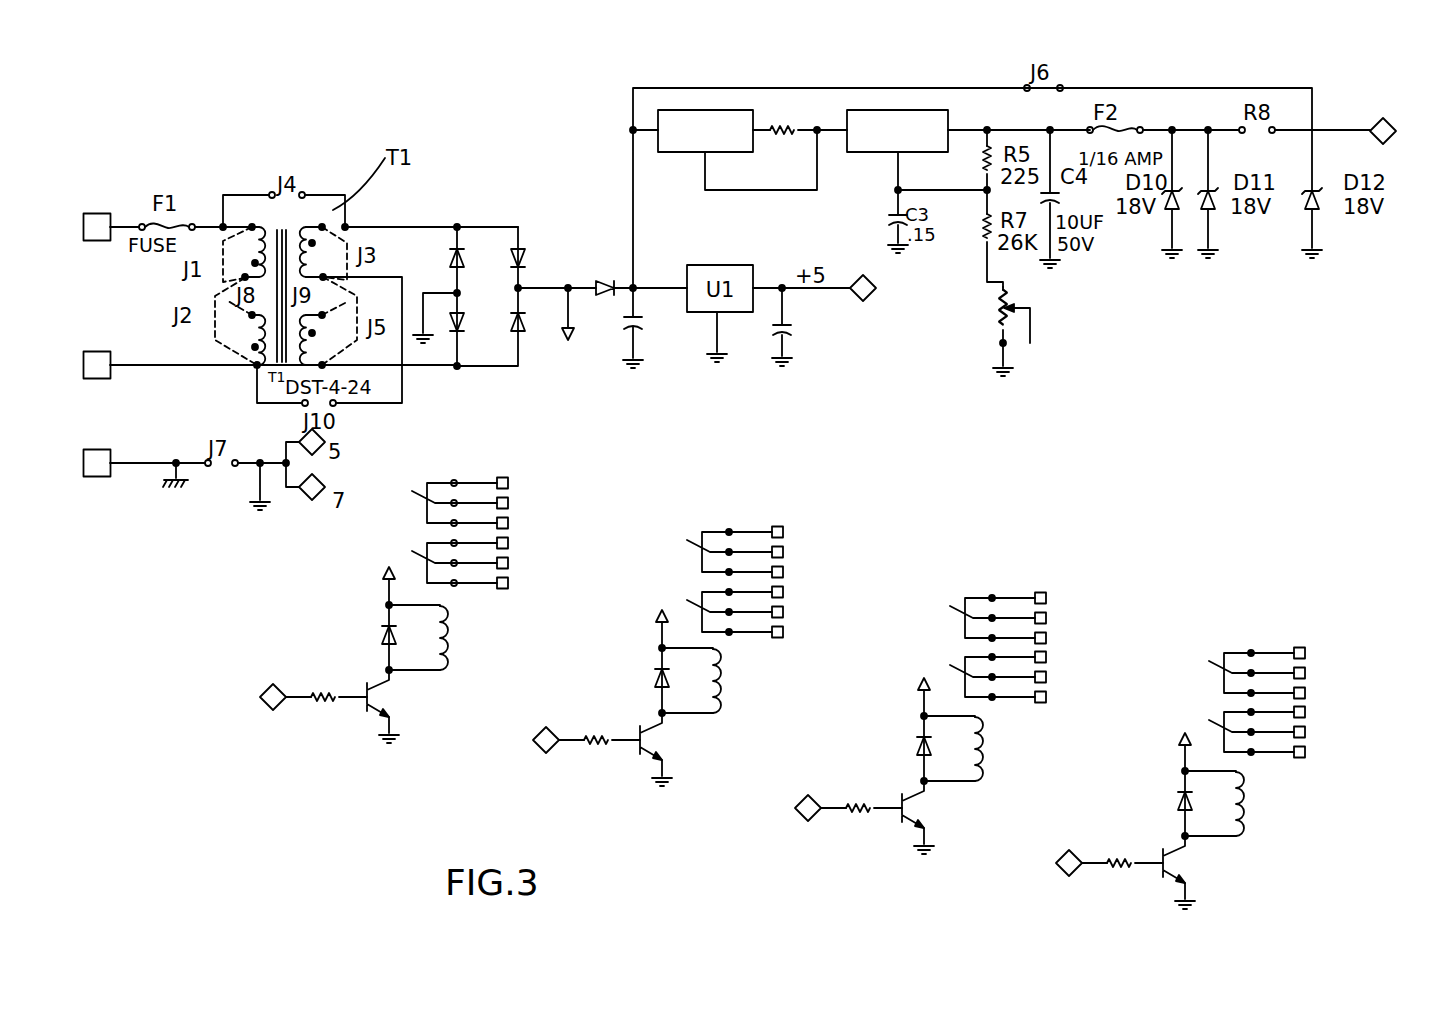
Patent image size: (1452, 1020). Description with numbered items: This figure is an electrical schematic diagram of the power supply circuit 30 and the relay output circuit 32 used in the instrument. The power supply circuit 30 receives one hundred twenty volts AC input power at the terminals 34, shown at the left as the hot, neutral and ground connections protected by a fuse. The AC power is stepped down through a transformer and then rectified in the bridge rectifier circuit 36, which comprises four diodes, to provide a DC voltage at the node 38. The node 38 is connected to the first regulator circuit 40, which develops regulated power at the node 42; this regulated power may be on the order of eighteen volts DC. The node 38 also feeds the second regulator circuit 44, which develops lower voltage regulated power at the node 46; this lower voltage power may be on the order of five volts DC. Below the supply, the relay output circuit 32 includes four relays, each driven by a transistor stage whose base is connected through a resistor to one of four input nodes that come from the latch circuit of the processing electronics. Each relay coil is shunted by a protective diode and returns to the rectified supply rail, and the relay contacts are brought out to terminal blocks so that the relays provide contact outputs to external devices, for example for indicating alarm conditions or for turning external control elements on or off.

The power supply circuit 30 is at (1068, 308).
The relay output circuit 32 is at (914, 521).
The terminals 34 is at (96, 213).
The bridge rectifier circuit 36 is at (492, 222).
The node 38 is at (522, 287).
The first regulator circuit 40 is at (812, 118).
The node 42 is at (1397, 140).
The second regulator circuit 44 is at (806, 380).
The node 46 is at (862, 303).